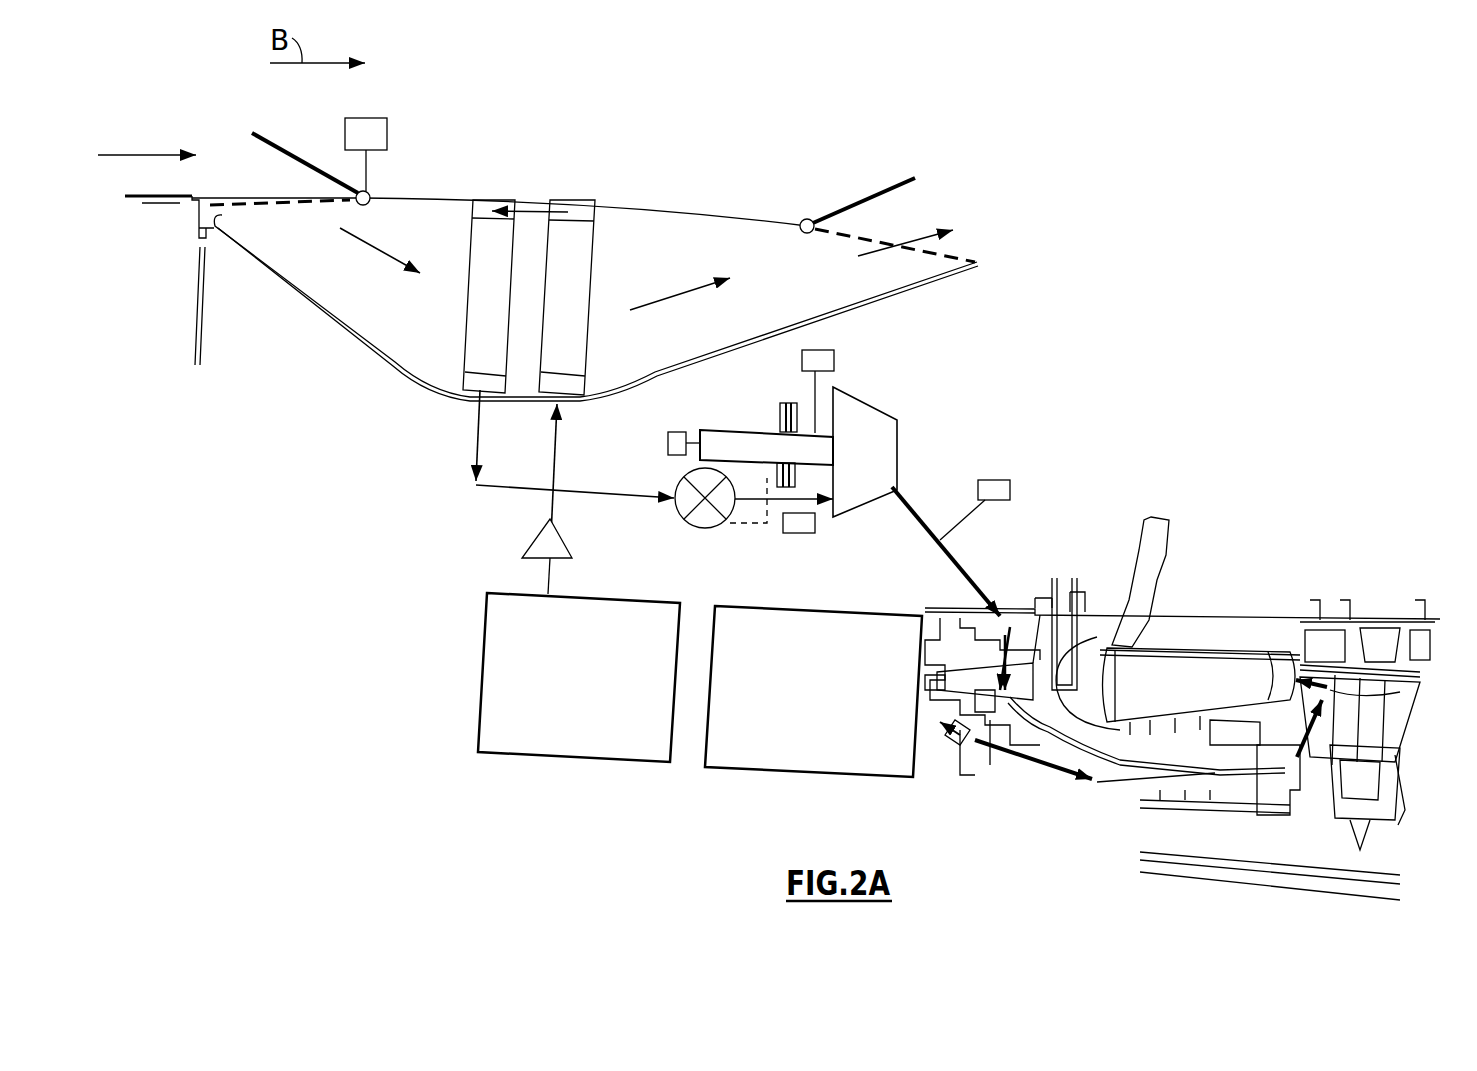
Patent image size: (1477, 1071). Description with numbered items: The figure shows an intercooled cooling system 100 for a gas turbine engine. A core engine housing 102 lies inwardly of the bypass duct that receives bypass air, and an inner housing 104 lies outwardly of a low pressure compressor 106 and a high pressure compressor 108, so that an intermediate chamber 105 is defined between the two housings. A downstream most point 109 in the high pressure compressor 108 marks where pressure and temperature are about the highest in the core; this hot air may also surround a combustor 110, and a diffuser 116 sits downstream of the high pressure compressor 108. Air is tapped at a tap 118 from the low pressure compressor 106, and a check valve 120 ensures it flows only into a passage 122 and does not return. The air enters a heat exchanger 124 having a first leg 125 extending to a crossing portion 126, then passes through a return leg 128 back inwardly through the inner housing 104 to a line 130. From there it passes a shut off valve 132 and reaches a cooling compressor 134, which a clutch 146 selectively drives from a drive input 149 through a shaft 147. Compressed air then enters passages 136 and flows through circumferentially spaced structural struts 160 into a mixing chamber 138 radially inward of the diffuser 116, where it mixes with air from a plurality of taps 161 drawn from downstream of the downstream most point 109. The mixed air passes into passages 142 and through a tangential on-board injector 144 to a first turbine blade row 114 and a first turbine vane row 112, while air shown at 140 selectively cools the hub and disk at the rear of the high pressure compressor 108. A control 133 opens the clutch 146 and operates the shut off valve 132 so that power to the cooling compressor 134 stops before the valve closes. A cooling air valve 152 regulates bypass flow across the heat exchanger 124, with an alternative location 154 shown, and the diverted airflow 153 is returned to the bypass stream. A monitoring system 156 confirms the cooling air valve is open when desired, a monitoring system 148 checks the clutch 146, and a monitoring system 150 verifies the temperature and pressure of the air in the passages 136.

The intercooled cooling system 100 is at (1032, 116).
The core engine housing 102 is at (650, 207).
The inner housing 104 is at (440, 392).
The intermediate chamber 105 is at (678, 349).
The low pressure compressor 106 is at (498, 678).
The high pressure compressor 108 is at (752, 737).
The downstream most point 109 is at (907, 607).
The combustor 110 is at (1153, 673).
The first turbine vane row 112 is at (1283, 670).
The first turbine blade row 114 is at (1330, 690).
The diffuser 116 is at (1020, 680).
The tap 118 is at (540, 580).
The check valve 120 is at (541, 542).
The passage 122 is at (552, 463).
The heat exchanger 124 is at (570, 297).
The first leg 125 is at (565, 258).
The crossing portion 126 is at (528, 205).
The return leg 128 is at (480, 265).
The line 130 is at (482, 490).
The shut off valve 132 is at (712, 530).
The control 133 is at (801, 533).
The cooling compressor 134 is at (863, 413).
The passages 136 is at (967, 570).
The mixing chamber 138 is at (968, 745).
The air passing to cool compressor 140 is at (945, 735).
The passages 142 is at (1063, 773).
The tangential on-board injector 144 is at (1277, 775).
The clutch 146 is at (780, 412).
The shaft 147 is at (715, 430).
The monitoring system 148 is at (834, 358).
The drive input 149 is at (667, 445).
The monitoring system 150 is at (998, 482).
The cooling air valve 152 is at (283, 148).
The airflow 153 is at (917, 227).
The alternative location 154 is at (900, 180).
The monitoring system 156 is at (387, 132).
The structural struts 160 is at (955, 690).
The taps 161 is at (960, 704).